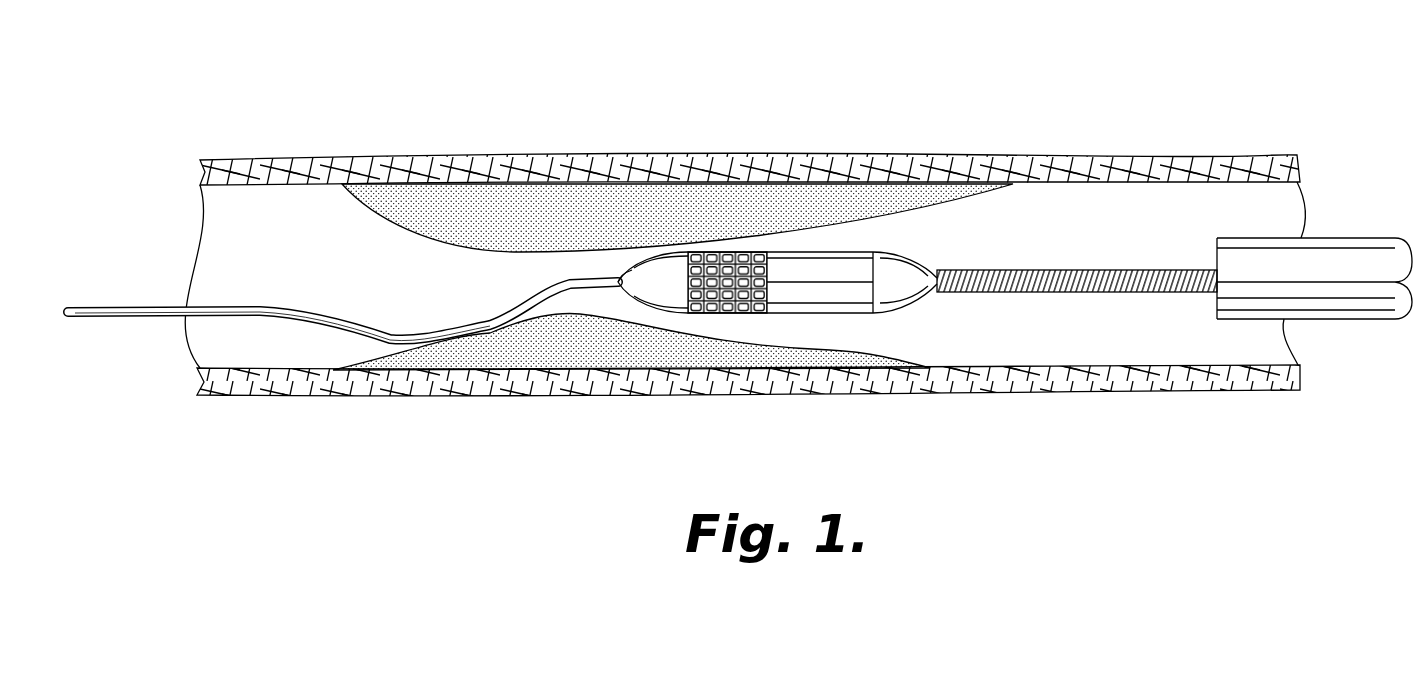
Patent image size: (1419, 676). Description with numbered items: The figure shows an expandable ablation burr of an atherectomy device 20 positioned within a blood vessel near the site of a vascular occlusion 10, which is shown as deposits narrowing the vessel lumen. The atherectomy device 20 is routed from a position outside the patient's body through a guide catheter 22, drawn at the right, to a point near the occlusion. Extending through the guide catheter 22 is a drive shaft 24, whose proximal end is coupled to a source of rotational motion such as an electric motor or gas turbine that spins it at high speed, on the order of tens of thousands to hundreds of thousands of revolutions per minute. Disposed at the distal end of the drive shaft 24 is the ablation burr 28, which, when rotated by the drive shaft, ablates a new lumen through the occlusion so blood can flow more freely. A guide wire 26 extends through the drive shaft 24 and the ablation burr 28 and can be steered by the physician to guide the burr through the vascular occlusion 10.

The vascular occlusion 10 is at (483, 222).
The atherectomy device 20 is at (1015, 279).
The guide catheter 22 is at (1364, 248).
The drive shaft 24 is at (1087, 270).
The guide wire 26 is at (266, 306).
The ablation burr 28 is at (905, 311).